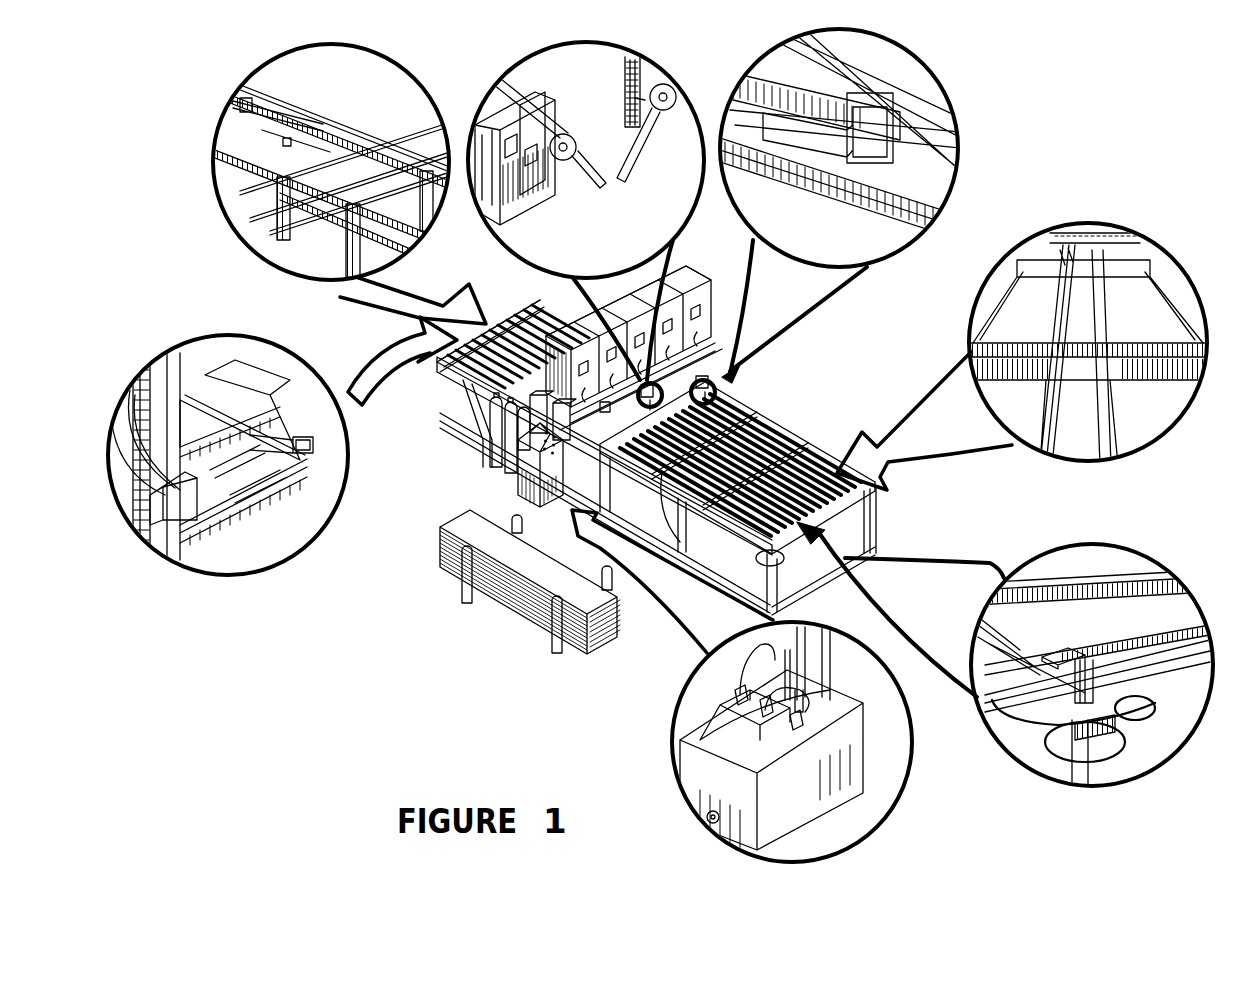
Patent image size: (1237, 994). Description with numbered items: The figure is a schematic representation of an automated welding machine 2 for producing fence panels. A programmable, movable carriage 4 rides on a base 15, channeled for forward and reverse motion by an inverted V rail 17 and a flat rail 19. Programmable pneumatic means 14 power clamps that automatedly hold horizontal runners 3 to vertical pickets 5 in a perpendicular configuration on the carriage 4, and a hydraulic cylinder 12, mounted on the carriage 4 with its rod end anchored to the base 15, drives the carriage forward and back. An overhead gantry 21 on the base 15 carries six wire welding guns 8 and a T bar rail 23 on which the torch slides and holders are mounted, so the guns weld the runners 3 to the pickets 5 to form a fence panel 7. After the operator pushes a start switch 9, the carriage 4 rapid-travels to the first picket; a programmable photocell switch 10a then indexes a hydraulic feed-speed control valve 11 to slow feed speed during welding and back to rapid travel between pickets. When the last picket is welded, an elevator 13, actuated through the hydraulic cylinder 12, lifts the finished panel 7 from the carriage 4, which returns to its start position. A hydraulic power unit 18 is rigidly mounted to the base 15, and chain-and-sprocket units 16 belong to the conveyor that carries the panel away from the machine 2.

The automated welding machine 2 is at (723, 284).
The horizontal runner 3 is at (780, 430).
The movable carriage 4 is at (810, 475).
The vertical picket 5 is at (748, 413).
The fence panel 7 is at (522, 335).
The welding gun 8 is at (617, 187).
The start switch 9 is at (517, 297).
The photocell switch 10a is at (676, 455).
The hydraulic feed-speed control valve 11 is at (712, 275).
The hydraulic cylinder 12 is at (290, 154).
The elevator 13 is at (335, 266).
The pneumatic means 14 is at (1092, 678).
The base 15 is at (682, 541).
The chain-and-sprocket unit 16 is at (288, 478).
The inverted "V" rail 17 is at (702, 656).
The hydraulic power unit 18 is at (771, 738).
The "flat" rail 19 is at (678, 701).
The overhead gantry 21 is at (383, 310).
The "T" bar rail 23 is at (373, 293).